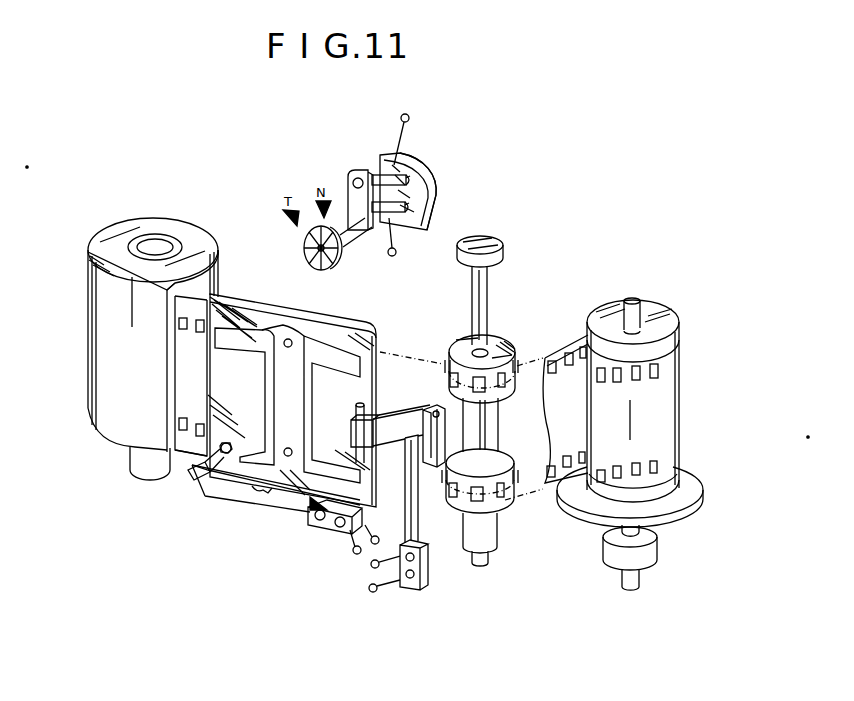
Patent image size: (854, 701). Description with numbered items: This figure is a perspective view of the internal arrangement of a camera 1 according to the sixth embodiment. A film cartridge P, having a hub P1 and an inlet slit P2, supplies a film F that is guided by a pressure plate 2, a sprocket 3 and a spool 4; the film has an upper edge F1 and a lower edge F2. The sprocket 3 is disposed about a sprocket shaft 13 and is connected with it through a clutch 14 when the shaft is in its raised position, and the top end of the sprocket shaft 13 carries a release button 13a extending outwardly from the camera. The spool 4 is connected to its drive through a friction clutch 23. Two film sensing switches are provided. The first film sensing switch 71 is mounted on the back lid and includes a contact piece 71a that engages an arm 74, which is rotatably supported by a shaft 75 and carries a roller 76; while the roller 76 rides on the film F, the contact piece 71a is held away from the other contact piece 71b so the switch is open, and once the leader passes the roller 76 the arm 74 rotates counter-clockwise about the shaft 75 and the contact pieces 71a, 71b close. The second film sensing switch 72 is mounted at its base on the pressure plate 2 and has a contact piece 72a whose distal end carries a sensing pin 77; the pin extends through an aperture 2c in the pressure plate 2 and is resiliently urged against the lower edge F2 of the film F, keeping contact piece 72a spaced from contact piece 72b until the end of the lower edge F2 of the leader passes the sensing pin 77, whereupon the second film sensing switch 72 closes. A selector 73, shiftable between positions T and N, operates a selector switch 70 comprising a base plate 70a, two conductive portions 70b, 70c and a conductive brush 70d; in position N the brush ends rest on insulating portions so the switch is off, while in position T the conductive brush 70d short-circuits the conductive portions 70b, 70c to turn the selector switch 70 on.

The camera 1 is at (245, 135).
The film cartridge P is at (112, 232).
The hub P1 is at (137, 461).
The inlet slit P2 is at (167, 300).
The film F is at (189, 348).
The upper edge of the film F1 is at (188, 306).
The lower edge of the film F2 is at (187, 437).
The pressure plate 2 is at (298, 326).
The aperture 2c is at (228, 443).
The sensing pin 77 is at (201, 470).
The second film sensing switch 72 is at (324, 526).
The contact piece 72a is at (287, 511).
The contact piece 72b is at (280, 493).
The shaft 75 is at (360, 400).
The arm 74 is at (401, 436).
The roller 76 is at (442, 438).
The first film sensing switch 71 is at (406, 581).
The contact piece 71a is at (426, 508).
The contact piece 71b is at (438, 515).
The sprocket shaft 13 is at (481, 292).
The release button 13a is at (503, 242).
The sprocket 3 is at (500, 338).
The clutch 14 is at (495, 542).
The spool 4 is at (653, 312).
The friction clutch 23 is at (620, 558).
The selector switch 70 is at (436, 181).
The base plate 70a is at (417, 162).
The conductive portion 70b is at (388, 166).
The conductive portion 70c is at (384, 220).
The conductive brush 70d is at (378, 165).
The selector 73 is at (304, 250).